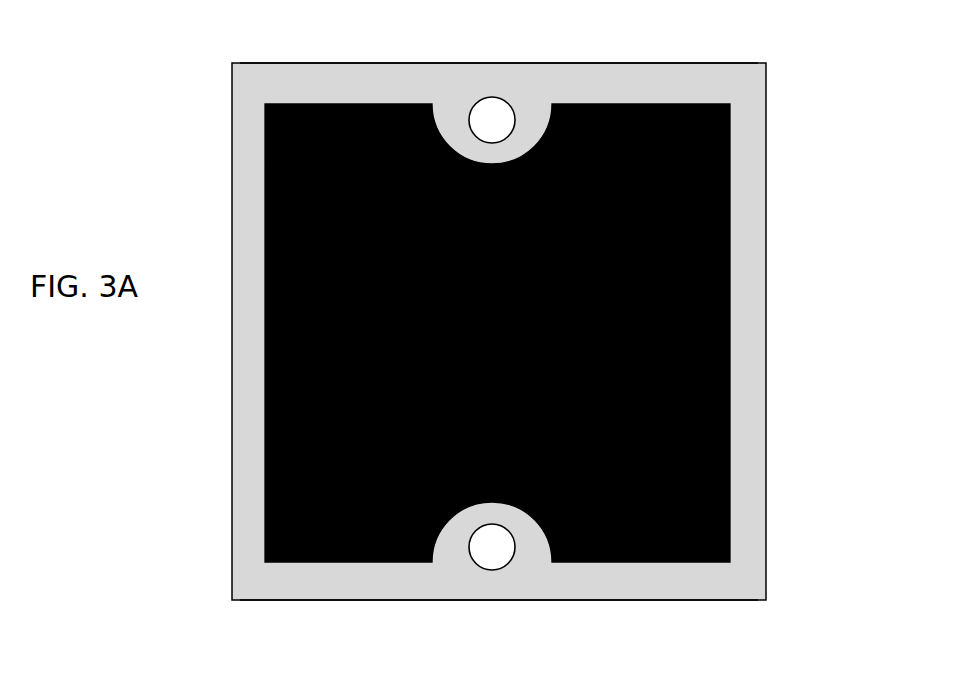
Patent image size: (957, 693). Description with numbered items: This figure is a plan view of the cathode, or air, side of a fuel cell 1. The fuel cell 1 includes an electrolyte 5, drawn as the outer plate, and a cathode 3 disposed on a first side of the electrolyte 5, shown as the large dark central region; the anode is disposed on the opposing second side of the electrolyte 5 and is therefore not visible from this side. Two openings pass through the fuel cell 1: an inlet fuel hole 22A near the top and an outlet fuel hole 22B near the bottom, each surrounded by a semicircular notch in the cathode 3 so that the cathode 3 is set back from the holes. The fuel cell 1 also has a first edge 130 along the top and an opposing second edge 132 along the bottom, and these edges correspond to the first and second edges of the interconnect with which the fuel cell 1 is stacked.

The fuel cell 1 is at (184, 207).
The cathode 3 is at (730, 332).
The electrolyte 5 is at (765, 358).
The inlet fuel hole 22A is at (500, 98).
The outlet fuel hole 22B is at (486, 570).
The first edge 130 is at (660, 63).
The second edge 132 is at (688, 600).